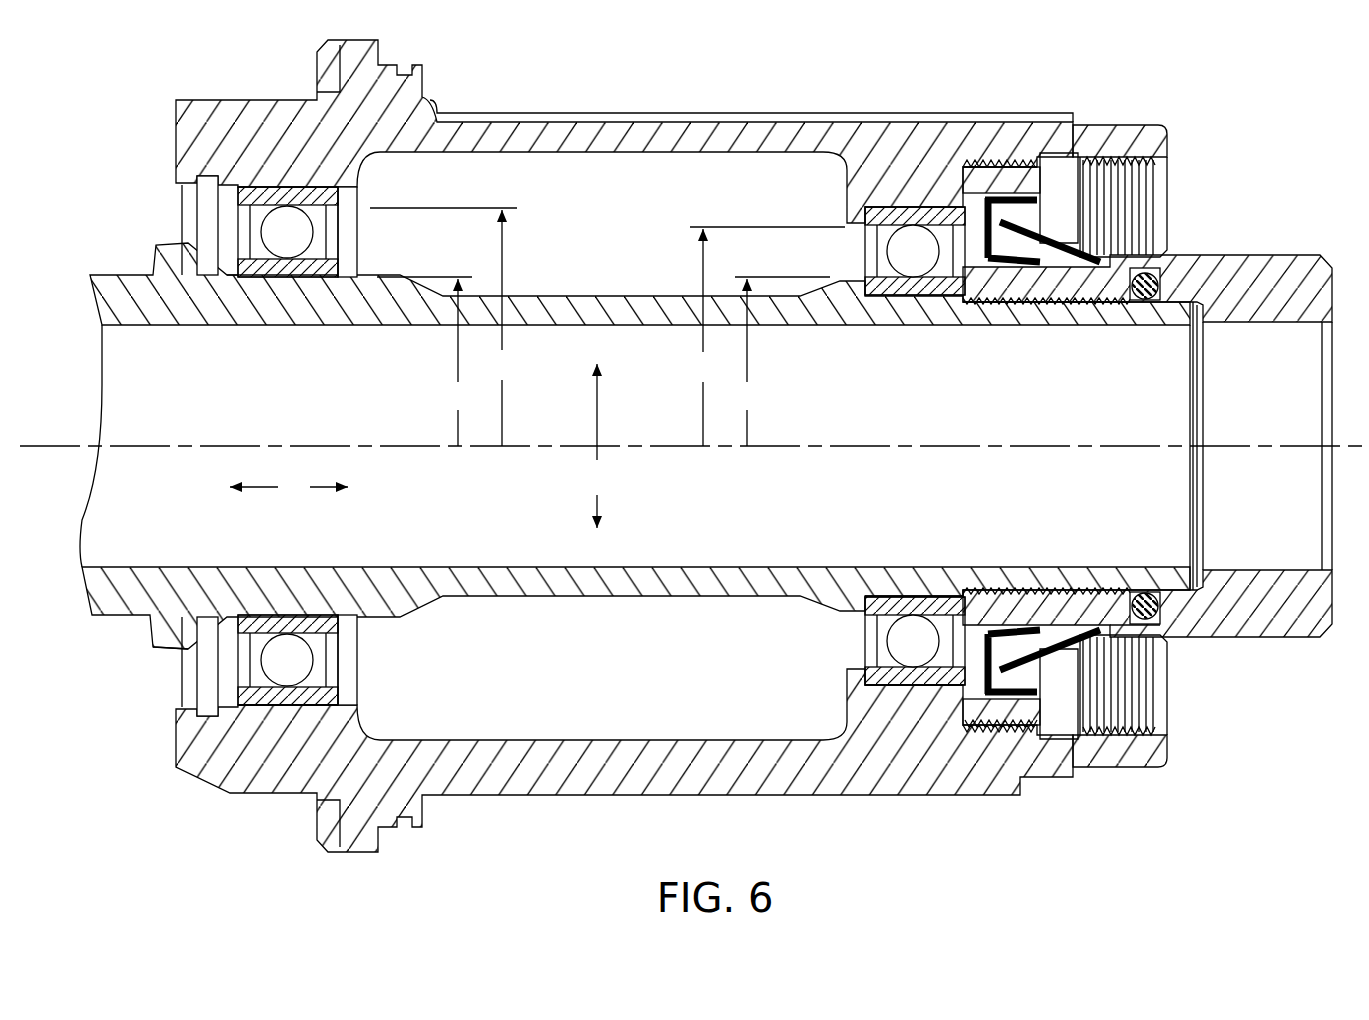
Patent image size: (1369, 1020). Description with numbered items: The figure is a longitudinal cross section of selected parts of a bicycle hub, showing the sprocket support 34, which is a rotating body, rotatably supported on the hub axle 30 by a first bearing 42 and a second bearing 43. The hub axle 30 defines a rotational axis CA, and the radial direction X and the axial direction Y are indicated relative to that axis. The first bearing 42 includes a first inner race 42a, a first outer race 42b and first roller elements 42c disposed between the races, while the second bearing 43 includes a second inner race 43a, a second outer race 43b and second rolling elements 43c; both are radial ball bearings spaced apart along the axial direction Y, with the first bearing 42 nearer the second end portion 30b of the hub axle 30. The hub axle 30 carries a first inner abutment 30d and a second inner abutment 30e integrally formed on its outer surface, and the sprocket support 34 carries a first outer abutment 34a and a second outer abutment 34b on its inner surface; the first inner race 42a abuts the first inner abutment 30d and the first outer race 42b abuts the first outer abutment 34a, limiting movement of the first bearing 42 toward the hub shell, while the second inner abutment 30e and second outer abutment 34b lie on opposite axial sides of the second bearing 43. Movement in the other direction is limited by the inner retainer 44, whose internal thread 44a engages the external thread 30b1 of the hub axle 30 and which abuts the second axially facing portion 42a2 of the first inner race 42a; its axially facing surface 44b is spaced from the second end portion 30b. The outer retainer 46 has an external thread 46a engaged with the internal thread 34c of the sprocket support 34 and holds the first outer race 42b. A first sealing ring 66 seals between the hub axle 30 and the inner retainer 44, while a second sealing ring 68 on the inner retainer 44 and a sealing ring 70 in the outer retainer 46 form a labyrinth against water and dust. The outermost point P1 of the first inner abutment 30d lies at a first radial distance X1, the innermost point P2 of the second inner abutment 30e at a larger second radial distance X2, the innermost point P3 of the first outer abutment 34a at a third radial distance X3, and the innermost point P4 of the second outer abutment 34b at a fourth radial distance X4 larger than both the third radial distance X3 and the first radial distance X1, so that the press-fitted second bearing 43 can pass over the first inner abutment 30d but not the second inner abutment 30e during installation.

The hub axle 30 is at (572, 598).
The second end portion 30b is at (1190, 584).
The external thread 30b1 is at (1168, 632).
The first inner abutment 30d is at (890, 596).
The second inner abutment 30e is at (195, 616).
The sprocket support 34 is at (710, 110).
The first outer abutment 34a is at (893, 690).
The second outer abutment 34b is at (313, 697).
The internal thread 34c is at (968, 190).
The first bearing 42 is at (854, 638).
The first inner race 42a is at (935, 294).
The second axially facing portion 42a2 is at (990, 590).
The first outer race 42b is at (860, 222).
The first roller elements 42c is at (905, 260).
The second bearing 43 is at (354, 650).
The second inner race 43a is at (322, 278).
The second outer race 43b is at (273, 187).
The second rolling elements 43c is at (280, 242).
The inner retainer 44 is at (1272, 252).
The internal thread 44a is at (1003, 304).
The axially facing surface 44b is at (1183, 318).
The outer retainer 46 is at (1048, 178).
The external thread 46a is at (1022, 165).
The first sealing ring 66 is at (1148, 582).
The second sealing ring 68 is at (1030, 654).
The sealing ring 70 is at (1012, 697).
The rotational axis CA is at (40, 440).
The outermost point P1 is at (855, 282).
The innermost point P2 is at (230, 275).
The innermost point P3 is at (855, 228).
The innermost point P4 is at (350, 207).
The radial direction X is at (596, 446).
The first radial distance X1 is at (747, 362).
The second radial distance X2 is at (425, 361).
The third radial distance X3 is at (702, 337).
The fourth radial distance X4 is at (502, 328).
The axial direction Y is at (289, 487).